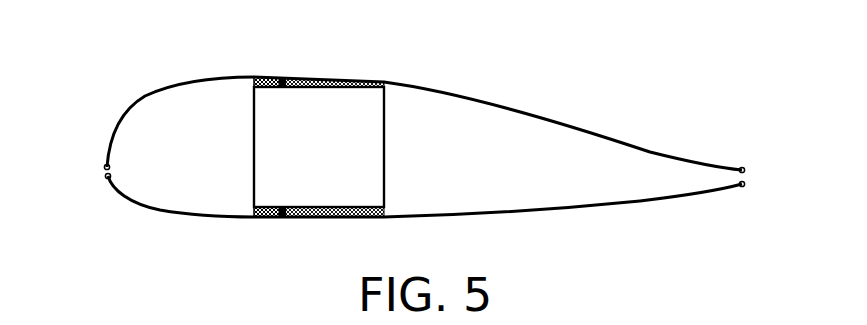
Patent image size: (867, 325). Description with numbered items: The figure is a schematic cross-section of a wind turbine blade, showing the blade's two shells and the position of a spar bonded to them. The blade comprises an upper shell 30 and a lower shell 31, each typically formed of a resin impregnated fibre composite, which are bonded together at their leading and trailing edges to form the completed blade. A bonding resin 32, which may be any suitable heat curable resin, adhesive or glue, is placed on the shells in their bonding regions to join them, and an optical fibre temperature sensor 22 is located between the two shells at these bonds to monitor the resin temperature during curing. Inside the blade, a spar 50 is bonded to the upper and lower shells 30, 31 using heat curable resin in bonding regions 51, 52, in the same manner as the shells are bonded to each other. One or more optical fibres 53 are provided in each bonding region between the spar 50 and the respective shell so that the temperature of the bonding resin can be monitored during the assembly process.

The optical fibre temperature sensor 22 is at (111, 174).
The upper shell 30 is at (610, 139).
The lower shell 31 is at (613, 205).
The bonding resin 32 is at (105, 176).
The spar 50 is at (254, 168).
The bonding region 51 is at (310, 218).
The bonding region 52 is at (310, 77).
The optical fibres 53 is at (268, 77).